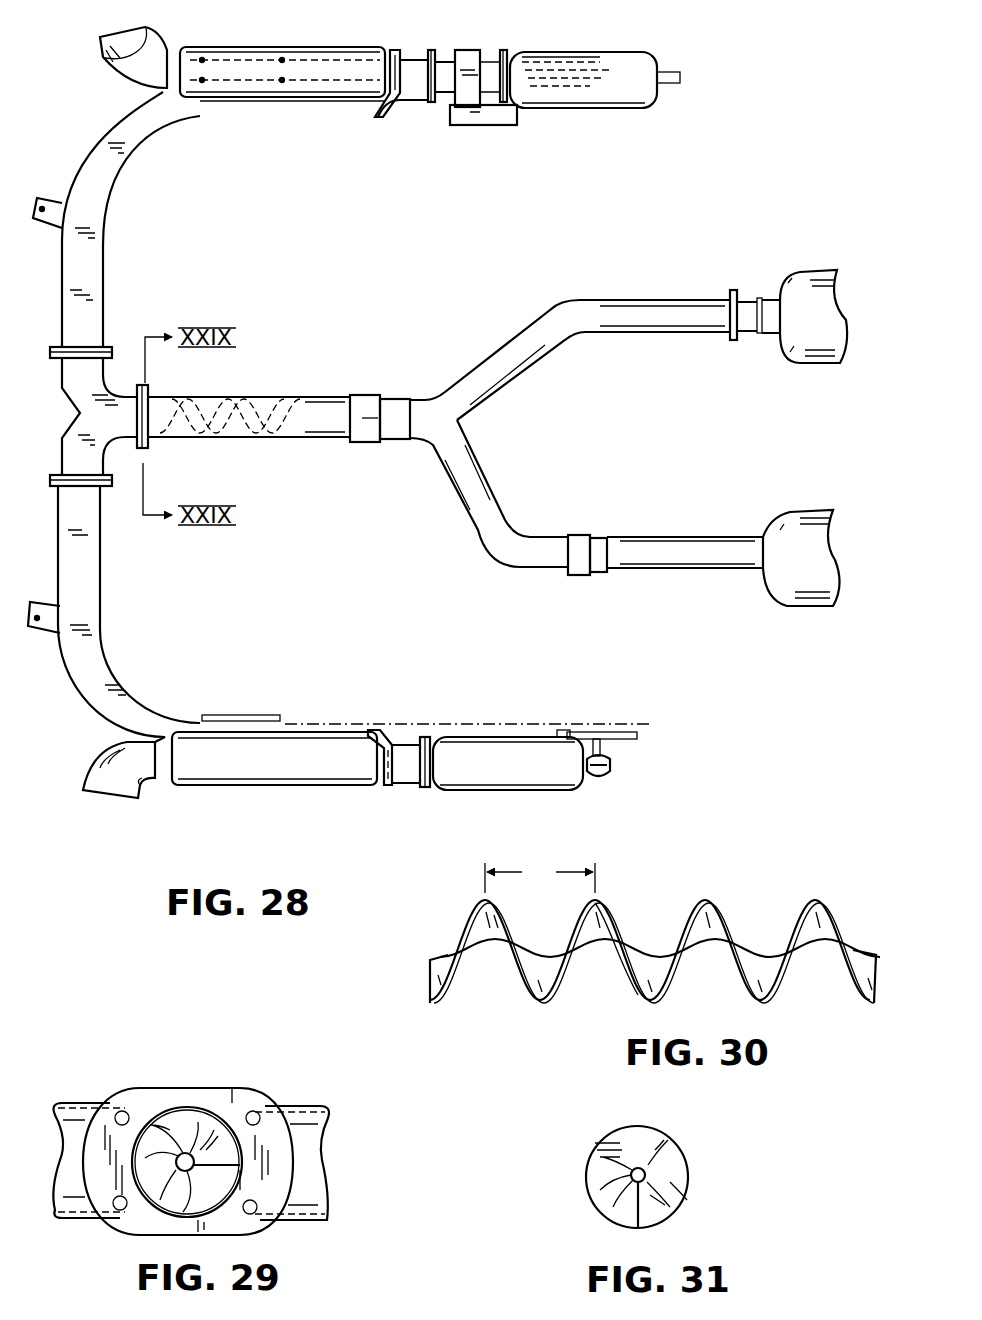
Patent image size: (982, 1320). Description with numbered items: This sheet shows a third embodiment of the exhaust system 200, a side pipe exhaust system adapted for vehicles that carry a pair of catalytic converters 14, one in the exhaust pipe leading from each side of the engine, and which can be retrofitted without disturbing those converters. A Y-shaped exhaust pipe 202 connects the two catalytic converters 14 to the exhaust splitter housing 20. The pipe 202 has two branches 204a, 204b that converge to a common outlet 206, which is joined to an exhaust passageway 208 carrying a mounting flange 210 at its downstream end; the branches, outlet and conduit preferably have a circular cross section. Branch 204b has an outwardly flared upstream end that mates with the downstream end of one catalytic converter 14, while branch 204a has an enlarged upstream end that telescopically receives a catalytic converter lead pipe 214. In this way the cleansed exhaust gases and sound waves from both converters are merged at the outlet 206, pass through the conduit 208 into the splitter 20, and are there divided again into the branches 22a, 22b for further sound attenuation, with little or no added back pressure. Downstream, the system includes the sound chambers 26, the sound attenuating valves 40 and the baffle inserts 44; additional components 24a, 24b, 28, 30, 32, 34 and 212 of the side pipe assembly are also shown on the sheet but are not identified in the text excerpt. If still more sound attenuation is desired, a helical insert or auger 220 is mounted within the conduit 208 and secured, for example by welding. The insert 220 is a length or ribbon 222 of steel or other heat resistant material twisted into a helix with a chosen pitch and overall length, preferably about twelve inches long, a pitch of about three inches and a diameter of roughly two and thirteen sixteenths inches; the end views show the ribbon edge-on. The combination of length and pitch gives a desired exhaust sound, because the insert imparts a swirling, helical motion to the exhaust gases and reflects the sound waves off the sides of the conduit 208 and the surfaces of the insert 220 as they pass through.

In FIG. 28, the catalytic converters 14 is at (812, 363).
In FIG. 28, the exhaust splitter housing 20 is at (118, 458).
In FIG. 28, the branch 22a is at (92, 563).
In FIG. 28, the branch 22b is at (97, 265).
In FIG. 28, the heat shield 24a is at (245, 716).
In FIG. 28, the heat shield 24b is at (280, 102).
In FIG. 28, the sound chambers 26 is at (603, 123).
In FIG. 28, the tailpipe 28 is at (405, 120).
In FIG. 28, the hanger bracket 30 is at (393, 49).
In FIG. 28, the catalytic converter 32 is at (227, 70).
In FIG. 28, the exhaust outlet elbow 34 is at (102, 36).
In FIG. 28, the sound attenuating valves 40 is at (478, 126).
In FIG. 28, the baffle inserts 44 is at (303, 65).
In FIG. 28, the exhaust system 200 is at (492, 463).
In FIG. 28, the Y-shaped exhaust pipe 202 is at (447, 376).
In FIG. 28, the branch 204a is at (535, 535).
In FIG. 29, the branch 204a is at (314, 1115).
In FIG. 28, the branch 204b is at (633, 300).
In FIG. 29, the branch 204b is at (75, 1112).
In FIG. 28, the common outlet 206 is at (398, 442).
In FIG. 28, the exhaust passageway 208 is at (240, 438).
In FIG. 29, the exhaust passageway 208 is at (155, 1202).
In FIG. 28, the mounting flange 210 is at (150, 397).
In FIG. 29, the mounting flange 210 is at (208, 1093).
In FIG. 28, the flange 212 is at (752, 298).
In FIG. 28, the catalytic converter lead pipe 214 is at (697, 570).
In FIG. 28, the helical insert 220 is at (245, 400).
In FIG. 30, the helical insert 220 is at (722, 877).
In FIG. 29, the helical insert 220 is at (180, 1120).
In FIG. 31, the helical insert 220 is at (686, 1138).
In FIG. 30, the ribbon 222 is at (617, 918).
In FIG. 31, the ribbon 222 is at (673, 1182).